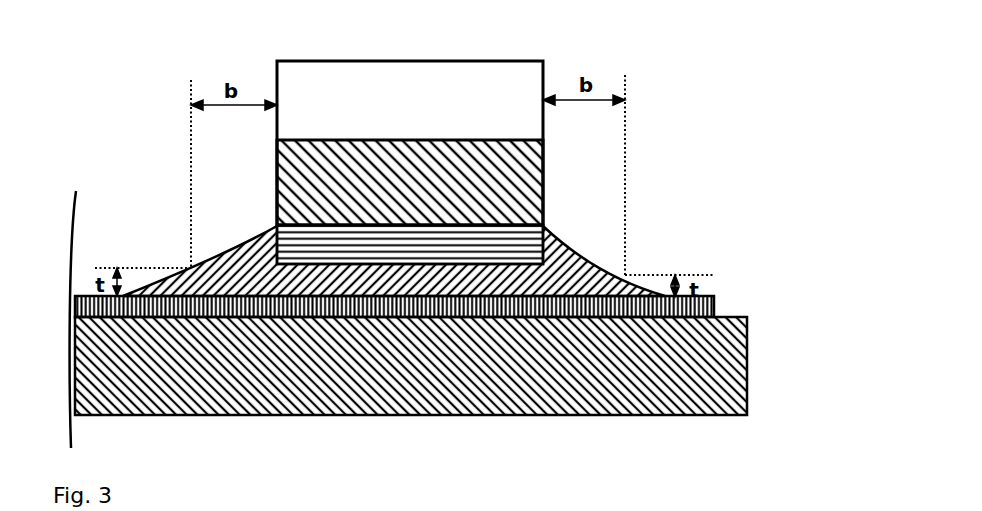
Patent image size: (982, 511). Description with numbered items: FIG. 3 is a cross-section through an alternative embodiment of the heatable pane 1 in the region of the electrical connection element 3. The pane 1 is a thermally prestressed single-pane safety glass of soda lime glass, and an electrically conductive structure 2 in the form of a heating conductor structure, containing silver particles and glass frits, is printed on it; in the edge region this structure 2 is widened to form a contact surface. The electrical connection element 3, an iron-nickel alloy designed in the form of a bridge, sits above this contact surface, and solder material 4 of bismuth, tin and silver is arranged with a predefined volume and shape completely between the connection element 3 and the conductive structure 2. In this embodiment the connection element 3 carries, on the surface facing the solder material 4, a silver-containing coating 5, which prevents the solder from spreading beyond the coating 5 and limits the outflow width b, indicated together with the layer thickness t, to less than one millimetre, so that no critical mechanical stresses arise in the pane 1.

The pane 1 is at (713, 348).
The electrically conductive structure 2 is at (692, 302).
The electrical connection element 3 is at (365, 137).
The solder material 4 is at (612, 267).
The silver-containing coating 5 is at (537, 223).